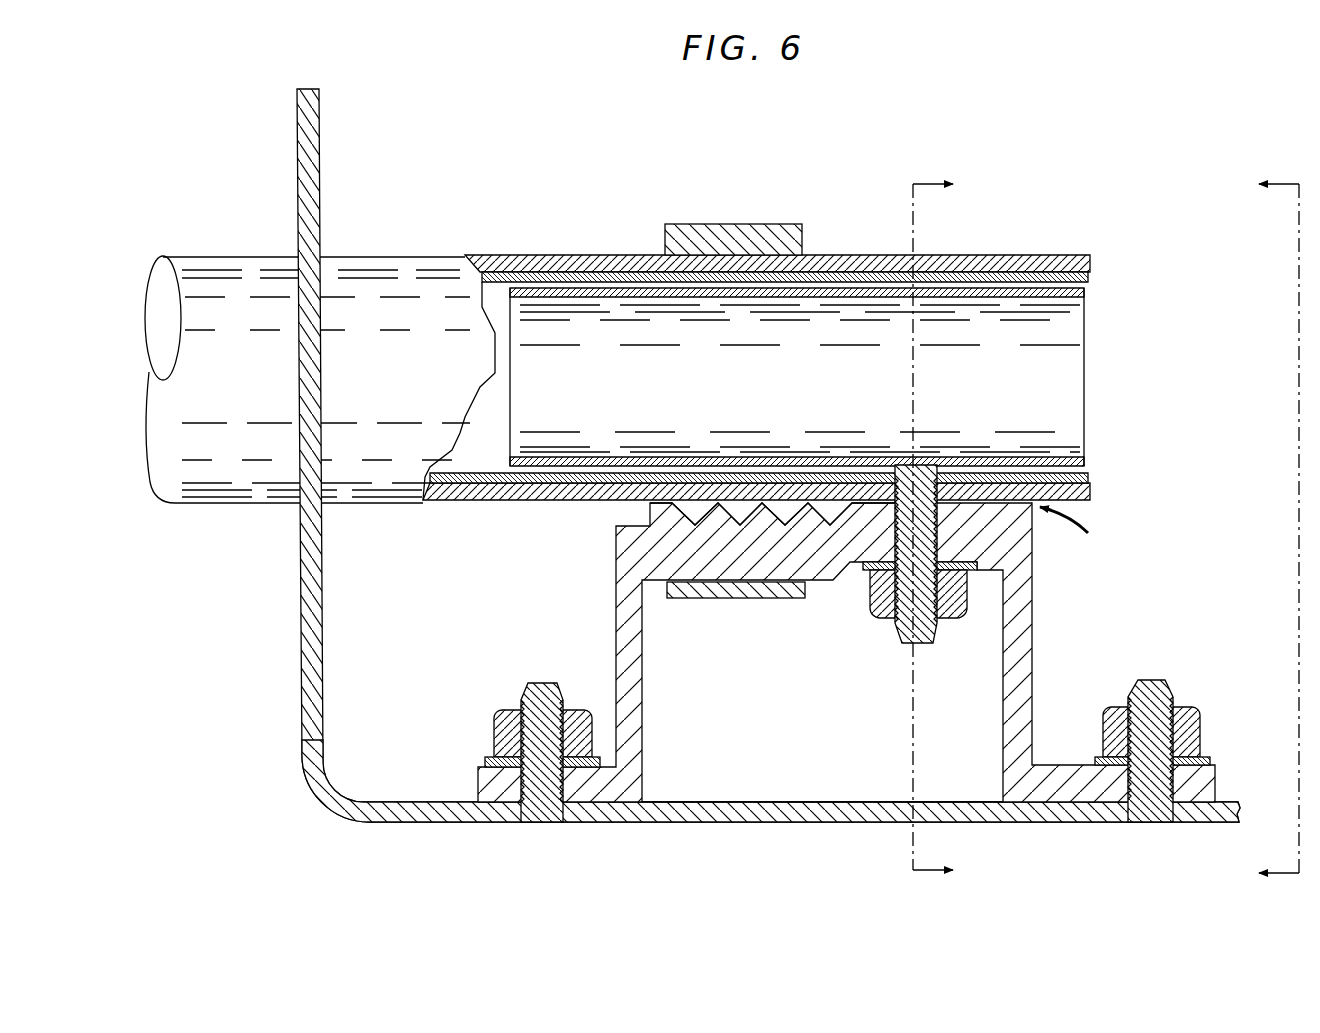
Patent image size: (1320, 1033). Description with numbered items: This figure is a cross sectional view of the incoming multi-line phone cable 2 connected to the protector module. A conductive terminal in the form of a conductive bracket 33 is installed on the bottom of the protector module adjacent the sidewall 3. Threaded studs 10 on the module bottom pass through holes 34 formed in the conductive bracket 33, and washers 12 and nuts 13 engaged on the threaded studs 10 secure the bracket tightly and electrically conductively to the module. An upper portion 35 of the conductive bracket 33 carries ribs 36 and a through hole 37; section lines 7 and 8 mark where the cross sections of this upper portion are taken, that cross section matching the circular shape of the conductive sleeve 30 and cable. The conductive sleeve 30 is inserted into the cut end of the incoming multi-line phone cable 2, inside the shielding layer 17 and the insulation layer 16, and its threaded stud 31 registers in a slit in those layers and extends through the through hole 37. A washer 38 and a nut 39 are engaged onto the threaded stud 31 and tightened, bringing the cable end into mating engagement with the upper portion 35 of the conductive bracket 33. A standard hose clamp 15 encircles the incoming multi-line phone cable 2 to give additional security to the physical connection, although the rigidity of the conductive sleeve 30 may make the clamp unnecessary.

The incoming multi-line phone cable 2 is at (200, 257).
The sidewall 3 is at (323, 588).
The section line 7 is at (944, 528).
The section line 8 is at (1266, 529).
The threaded studs 10 is at (540, 683).
The washers 12 is at (488, 760).
The nuts 13 is at (500, 712).
The hose clamp 15 is at (710, 224).
The insulation layer 16 is at (1090, 488).
The shielding layer 17 is at (1093, 478).
The conductive sleeve 30 is at (1063, 453).
The threaded stud 31 is at (940, 555).
The conductive bracket 33 is at (616, 607).
The holes 34 is at (572, 790).
The upper portion 35 is at (1081, 528).
The ribs 36 is at (672, 516).
The through hole 37 is at (948, 515).
The washer 38 is at (968, 588).
The nut 39 is at (882, 605).